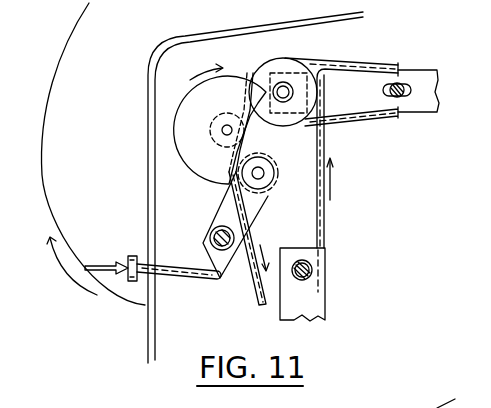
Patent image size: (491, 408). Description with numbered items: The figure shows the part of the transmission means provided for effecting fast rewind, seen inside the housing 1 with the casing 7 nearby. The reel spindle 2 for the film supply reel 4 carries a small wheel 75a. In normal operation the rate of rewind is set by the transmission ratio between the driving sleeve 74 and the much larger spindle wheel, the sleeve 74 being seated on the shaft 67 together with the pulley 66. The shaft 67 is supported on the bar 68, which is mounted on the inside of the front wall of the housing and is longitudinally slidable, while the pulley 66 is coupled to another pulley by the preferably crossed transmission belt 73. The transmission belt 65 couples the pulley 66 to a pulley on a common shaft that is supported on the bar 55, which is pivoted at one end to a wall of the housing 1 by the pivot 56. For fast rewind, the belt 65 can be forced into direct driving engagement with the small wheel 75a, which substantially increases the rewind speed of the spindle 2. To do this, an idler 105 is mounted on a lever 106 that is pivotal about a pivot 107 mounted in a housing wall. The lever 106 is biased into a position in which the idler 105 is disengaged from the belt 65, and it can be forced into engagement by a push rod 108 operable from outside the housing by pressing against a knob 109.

The housing 1 is at (153, 110).
The reel spindle 2 is at (224, 126).
The film supply reel 4 is at (63, 58).
The casing 7 is at (190, 158).
The bar 55 is at (316, 307).
The pivot 56 is at (310, 271).
The transmission belt 65 is at (252, 286).
The pulley 66 is at (284, 63).
The shaft 67 is at (292, 86).
The bar 68 is at (420, 78).
The transmission belt 73 is at (360, 123).
The driving sleeve 74 is at (295, 93).
The small wheel 75a is at (252, 141).
The idler 105 is at (268, 181).
The lever 106 is at (227, 212).
The pivot 107 is at (212, 247).
The push rod 108 is at (178, 278).
The knob 109 is at (135, 256).